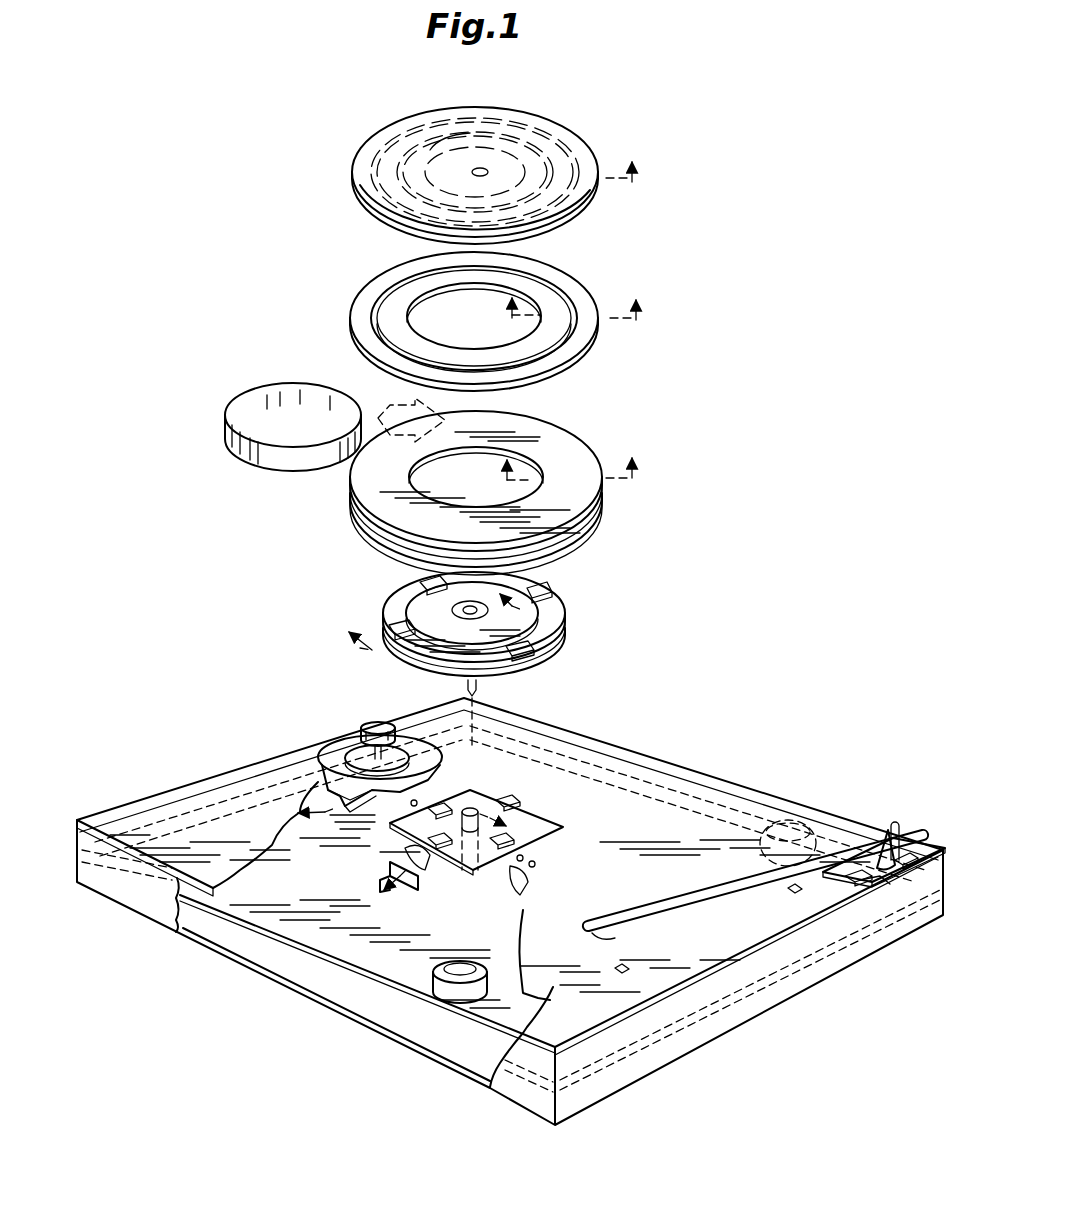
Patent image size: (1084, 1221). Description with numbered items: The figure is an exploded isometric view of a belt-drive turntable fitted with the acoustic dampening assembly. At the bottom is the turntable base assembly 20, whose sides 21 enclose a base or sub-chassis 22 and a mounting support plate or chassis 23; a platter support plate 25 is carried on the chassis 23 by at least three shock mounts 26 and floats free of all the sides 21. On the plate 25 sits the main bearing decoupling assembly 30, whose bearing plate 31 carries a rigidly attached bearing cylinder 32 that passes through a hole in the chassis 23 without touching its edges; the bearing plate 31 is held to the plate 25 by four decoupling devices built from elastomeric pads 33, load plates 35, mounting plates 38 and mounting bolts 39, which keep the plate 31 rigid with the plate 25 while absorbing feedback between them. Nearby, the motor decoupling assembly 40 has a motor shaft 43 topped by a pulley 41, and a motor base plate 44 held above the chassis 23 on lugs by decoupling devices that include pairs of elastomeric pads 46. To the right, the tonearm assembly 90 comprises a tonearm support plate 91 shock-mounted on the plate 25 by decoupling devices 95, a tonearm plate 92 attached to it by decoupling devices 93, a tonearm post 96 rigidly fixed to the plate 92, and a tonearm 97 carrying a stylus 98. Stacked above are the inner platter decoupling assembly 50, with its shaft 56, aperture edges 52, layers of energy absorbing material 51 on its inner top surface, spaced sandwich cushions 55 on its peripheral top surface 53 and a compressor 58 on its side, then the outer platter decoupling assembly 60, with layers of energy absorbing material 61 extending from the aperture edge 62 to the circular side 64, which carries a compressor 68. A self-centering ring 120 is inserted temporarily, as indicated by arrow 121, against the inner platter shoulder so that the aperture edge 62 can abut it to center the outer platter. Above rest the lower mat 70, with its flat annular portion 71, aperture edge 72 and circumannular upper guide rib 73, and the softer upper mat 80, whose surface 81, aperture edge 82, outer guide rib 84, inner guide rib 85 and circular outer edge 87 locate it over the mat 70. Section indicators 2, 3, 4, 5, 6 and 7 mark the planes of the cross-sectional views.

The turntable base assembly 20 is at (511, 900).
The sides 21 is at (117, 895).
The base or sub-chassis 22 is at (336, 1004).
The mounting support plate or chassis 23 is at (485, 940).
The platter support plate 25 is at (510, 807).
The shock mounts 26 is at (318, 782).
The main bearing decoupling assembly 30 is at (476, 842).
The bearing plate 31 is at (408, 834).
The bearing cylinder 32 is at (470, 808).
The elastomeric pad 33 is at (428, 813).
The load plates 35 is at (443, 866).
The mounting plates 38 is at (418, 892).
The mounting bolts 39 is at (418, 803).
The motor decoupling assembly 40 is at (348, 756).
The pulley 41 is at (379, 722).
The motor shaft 43 is at (356, 742).
The motor base plate 44 is at (348, 752).
The elastomeric pads 46 is at (352, 795).
The inner platter decoupling assembly 50 is at (490, 626).
The layers of energy absorbing material 51 is at (471, 617).
The aperture edges 52 is at (458, 616).
The peripheral top surface 53 is at (565, 620).
The sandwich cushions 55 is at (428, 582).
The shaft 56 is at (480, 686).
The compressor 58 is at (540, 664).
The outer platter decoupling assembly 60 is at (501, 482).
The layers of energy absorbing material 61 is at (480, 482).
The aperture edge 62 is at (420, 459).
The circular side 64 is at (392, 540).
The compressor 68 is at (598, 505).
The lower mat 70 is at (467, 312).
The flat annular portion 71 is at (546, 338).
The aperture edge 72 is at (405, 313).
The circumannular upper guide rib 73 is at (566, 345).
The upper mat 80 is at (532, 166).
The record surface 81 is at (500, 162).
The aperture edge 82 is at (489, 172).
The outer circumannular guide rib 84 is at (404, 124).
The circumannular inner guide rib 85 is at (492, 121).
The circular outer edge 87 is at (575, 212).
The tonearm assembly 90 is at (764, 878).
The tonearm support plate 91 is at (859, 879).
The tonearm plate 92 is at (880, 878).
The decoupling devices 93 is at (855, 878).
The decoupling devices 95 is at (784, 892).
The tonearm post 96 is at (873, 853).
The tonearm 97 is at (688, 895).
The stylus 98 is at (596, 933).
The self-centering ring 120 is at (222, 436).
The arrow 121 is at (432, 440).
The section line 2 is at (454, 861).
The section line 3 is at (347, 795).
The section line 4 is at (436, 630).
The section line 5 is at (567, 480).
The section line 6 is at (570, 317).
The section line 7 is at (624, 182).